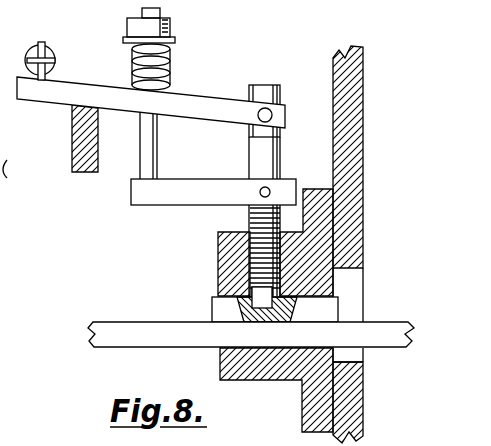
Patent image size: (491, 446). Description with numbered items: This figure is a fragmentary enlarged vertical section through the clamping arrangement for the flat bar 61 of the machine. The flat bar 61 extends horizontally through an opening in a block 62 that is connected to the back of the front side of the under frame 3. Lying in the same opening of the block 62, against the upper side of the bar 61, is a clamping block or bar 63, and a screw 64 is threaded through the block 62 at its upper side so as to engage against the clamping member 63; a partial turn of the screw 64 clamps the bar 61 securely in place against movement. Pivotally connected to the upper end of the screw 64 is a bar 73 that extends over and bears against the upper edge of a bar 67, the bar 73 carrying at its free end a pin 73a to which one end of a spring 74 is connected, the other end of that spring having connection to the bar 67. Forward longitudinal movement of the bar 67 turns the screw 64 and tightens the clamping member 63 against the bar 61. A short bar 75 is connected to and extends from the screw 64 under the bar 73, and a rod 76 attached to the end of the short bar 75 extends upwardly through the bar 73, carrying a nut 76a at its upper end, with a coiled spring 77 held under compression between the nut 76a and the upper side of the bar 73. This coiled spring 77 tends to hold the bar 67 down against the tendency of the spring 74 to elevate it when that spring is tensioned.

The under frame 3 is at (355, 155).
The flat bar 61 is at (148, 330).
The block 62 is at (220, 255).
The clamping block 63 is at (332, 307).
The screw 64 is at (250, 218).
The bar 67 is at (72, 147).
The bar 73 is at (184, 102).
The pin 73a is at (43, 44).
The spring 74 is at (56, 62).
The short bar 75 is at (187, 187).
The rod 76 is at (157, 139).
The nut 76a is at (165, 32).
The coiled spring 77 is at (168, 62).